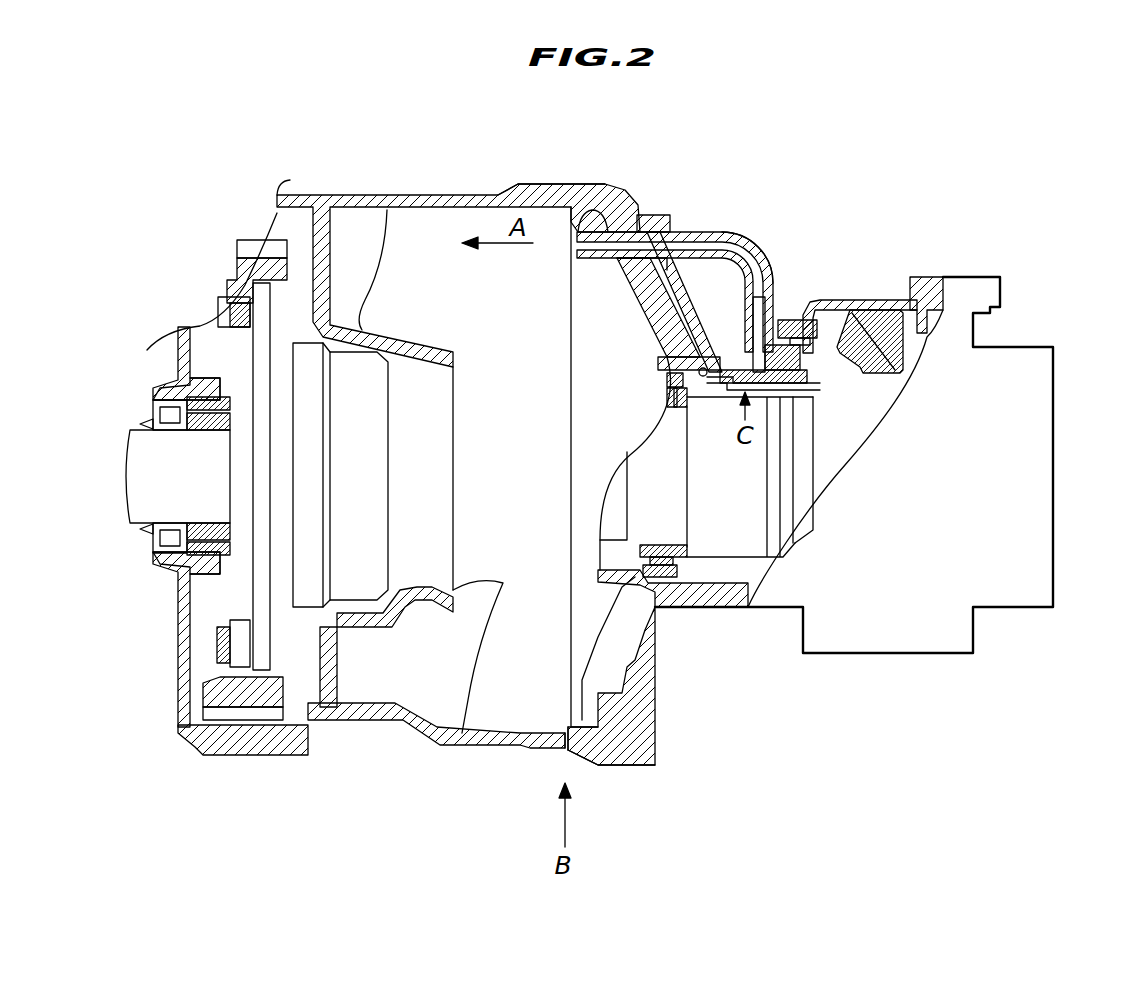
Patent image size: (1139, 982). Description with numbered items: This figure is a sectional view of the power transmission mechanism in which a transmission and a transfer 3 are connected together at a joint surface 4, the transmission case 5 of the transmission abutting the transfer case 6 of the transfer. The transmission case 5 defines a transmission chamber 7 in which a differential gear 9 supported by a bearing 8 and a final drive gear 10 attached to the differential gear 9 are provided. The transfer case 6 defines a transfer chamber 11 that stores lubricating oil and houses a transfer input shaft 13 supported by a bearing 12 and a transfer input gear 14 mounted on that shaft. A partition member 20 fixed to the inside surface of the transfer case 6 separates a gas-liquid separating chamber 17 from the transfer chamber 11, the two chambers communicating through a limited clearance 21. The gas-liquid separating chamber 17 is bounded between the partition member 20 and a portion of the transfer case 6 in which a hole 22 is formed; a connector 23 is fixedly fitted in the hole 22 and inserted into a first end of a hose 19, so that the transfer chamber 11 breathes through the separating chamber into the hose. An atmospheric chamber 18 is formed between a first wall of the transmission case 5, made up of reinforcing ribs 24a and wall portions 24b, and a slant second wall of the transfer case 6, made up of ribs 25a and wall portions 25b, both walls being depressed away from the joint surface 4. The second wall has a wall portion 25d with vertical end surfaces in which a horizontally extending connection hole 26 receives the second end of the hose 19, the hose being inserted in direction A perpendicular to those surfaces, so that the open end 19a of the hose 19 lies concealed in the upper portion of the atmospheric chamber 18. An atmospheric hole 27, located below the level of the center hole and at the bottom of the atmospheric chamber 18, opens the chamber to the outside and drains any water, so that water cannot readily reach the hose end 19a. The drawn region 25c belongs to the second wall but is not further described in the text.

The transfer 3 is at (1033, 502).
The joint surface 4 is at (470, 722).
The transmission case 5 is at (240, 744).
The transfer case 6 is at (938, 280).
The transmission chamber 7 is at (296, 225).
The bearing 8 is at (172, 566).
The differential gear 9 is at (263, 488).
The final drive gear 10 is at (220, 695).
The transfer chamber 11 is at (731, 578).
The bearing 12 is at (678, 578).
The transfer input shaft 13 is at (740, 523).
The transfer input gear 14 is at (883, 330).
The gas-liquid separating chamber 17 is at (805, 372).
The atmospheric chamber 18 is at (500, 693).
The hose 19 is at (696, 262).
The open end of hose 19a is at (557, 203).
The partition member 20 is at (845, 400).
The limited clearance 21 is at (780, 413).
The hole 22 is at (784, 322).
The connector 23 is at (768, 313).
The ribs 24a is at (352, 250).
The wall portions 24b is at (520, 184).
The ribs 25a is at (622, 693).
The wall portions 25b is at (627, 752).
The third bracket portion 25c is at (738, 232).
The wall portion 25d is at (684, 232).
The connection hole 26 is at (642, 217).
The atmospheric hole 27 is at (567, 748).